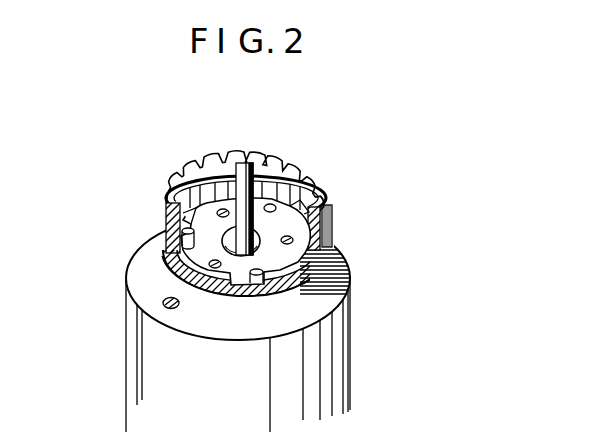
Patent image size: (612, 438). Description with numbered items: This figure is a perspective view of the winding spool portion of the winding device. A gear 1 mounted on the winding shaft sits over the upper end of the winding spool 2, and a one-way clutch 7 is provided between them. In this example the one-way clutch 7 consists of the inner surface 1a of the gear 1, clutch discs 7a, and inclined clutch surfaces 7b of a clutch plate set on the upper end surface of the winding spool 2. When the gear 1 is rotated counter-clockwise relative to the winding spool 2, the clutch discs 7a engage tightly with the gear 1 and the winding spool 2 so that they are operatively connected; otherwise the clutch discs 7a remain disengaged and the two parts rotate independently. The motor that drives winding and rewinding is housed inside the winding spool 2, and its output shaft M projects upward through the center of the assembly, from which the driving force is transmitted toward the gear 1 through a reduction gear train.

The gear 1 is at (314, 190).
The inner surface of the gear 1a is at (183, 228).
The winding spool 2 is at (345, 351).
The one-way clutch 7 is at (258, 183).
The clutch discs 7a is at (270, 204).
The inclined clutch surfaces 7b is at (299, 191).
The output shaft of the motor M is at (243, 163).